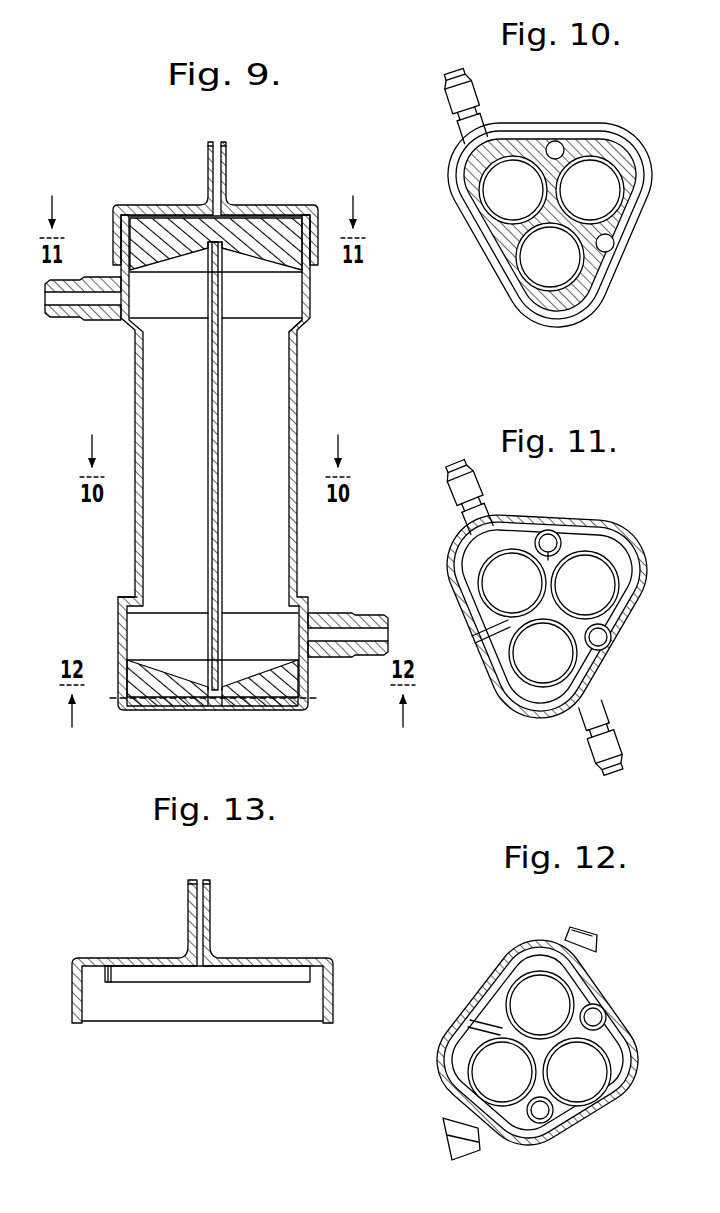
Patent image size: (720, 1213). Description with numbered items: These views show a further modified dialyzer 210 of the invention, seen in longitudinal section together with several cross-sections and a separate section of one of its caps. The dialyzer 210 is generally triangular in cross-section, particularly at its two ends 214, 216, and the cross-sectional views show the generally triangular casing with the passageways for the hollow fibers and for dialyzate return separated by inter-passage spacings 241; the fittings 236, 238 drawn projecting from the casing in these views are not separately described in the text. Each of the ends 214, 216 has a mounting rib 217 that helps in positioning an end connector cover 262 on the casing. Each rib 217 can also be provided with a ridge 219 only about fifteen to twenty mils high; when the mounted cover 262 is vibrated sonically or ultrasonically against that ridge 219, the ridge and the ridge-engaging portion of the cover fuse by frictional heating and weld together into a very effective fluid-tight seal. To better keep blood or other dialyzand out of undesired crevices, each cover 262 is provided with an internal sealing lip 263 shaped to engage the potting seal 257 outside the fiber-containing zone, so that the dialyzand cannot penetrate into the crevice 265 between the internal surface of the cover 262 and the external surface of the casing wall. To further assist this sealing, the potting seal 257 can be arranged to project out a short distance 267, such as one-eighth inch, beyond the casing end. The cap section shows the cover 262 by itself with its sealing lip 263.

In FIG. 9, the dialyzer 210 is at (302, 462).
In FIG. 10, the dialyzer 210 is at (652, 233).
In FIG. 11, the dialyzer 210 is at (641, 543).
In FIG. 12, the dialyzer 210 is at (619, 989).
In FIG. 9, the end 214 is at (221, 476).
In FIG. 9, the end 216 is at (308, 308).
In FIG. 9, the mounting rib 217 is at (316, 263).
In FIG. 9, the ridge 219 is at (130, 665).
In FIG. 9, the inlet nipple 236 is at (357, 613).
In FIG. 10, the inlet nipple 236 is at (444, 97).
In FIG. 11, the inlet nipple 236 is at (447, 462).
In FIG. 12, the inlet nipple 236 is at (594, 940).
In FIG. 9, the outlet nipple 238 is at (65, 317).
In FIG. 11, the outlet nipple 238 is at (611, 740).
In FIG. 12, the outlet nipple 238 is at (446, 1125).
In FIG. 11, the inter-passage spacing 241 is at (529, 552).
In FIG. 12, the inter-passage spacing 241 is at (594, 1037).
In FIG. 9, the potting seal 257 is at (263, 240).
In FIG. 9, the end connector cover 262 is at (194, 181).
In FIG. 13, the end connector cover 262 is at (266, 946).
In FIG. 9, the internal sealing lip 263 is at (122, 232).
In FIG. 13, the internal sealing lip 263 is at (313, 973).
In FIG. 9, the crevice 265 is at (313, 236).
In FIG. 9, the short distance 267 is at (142, 214).